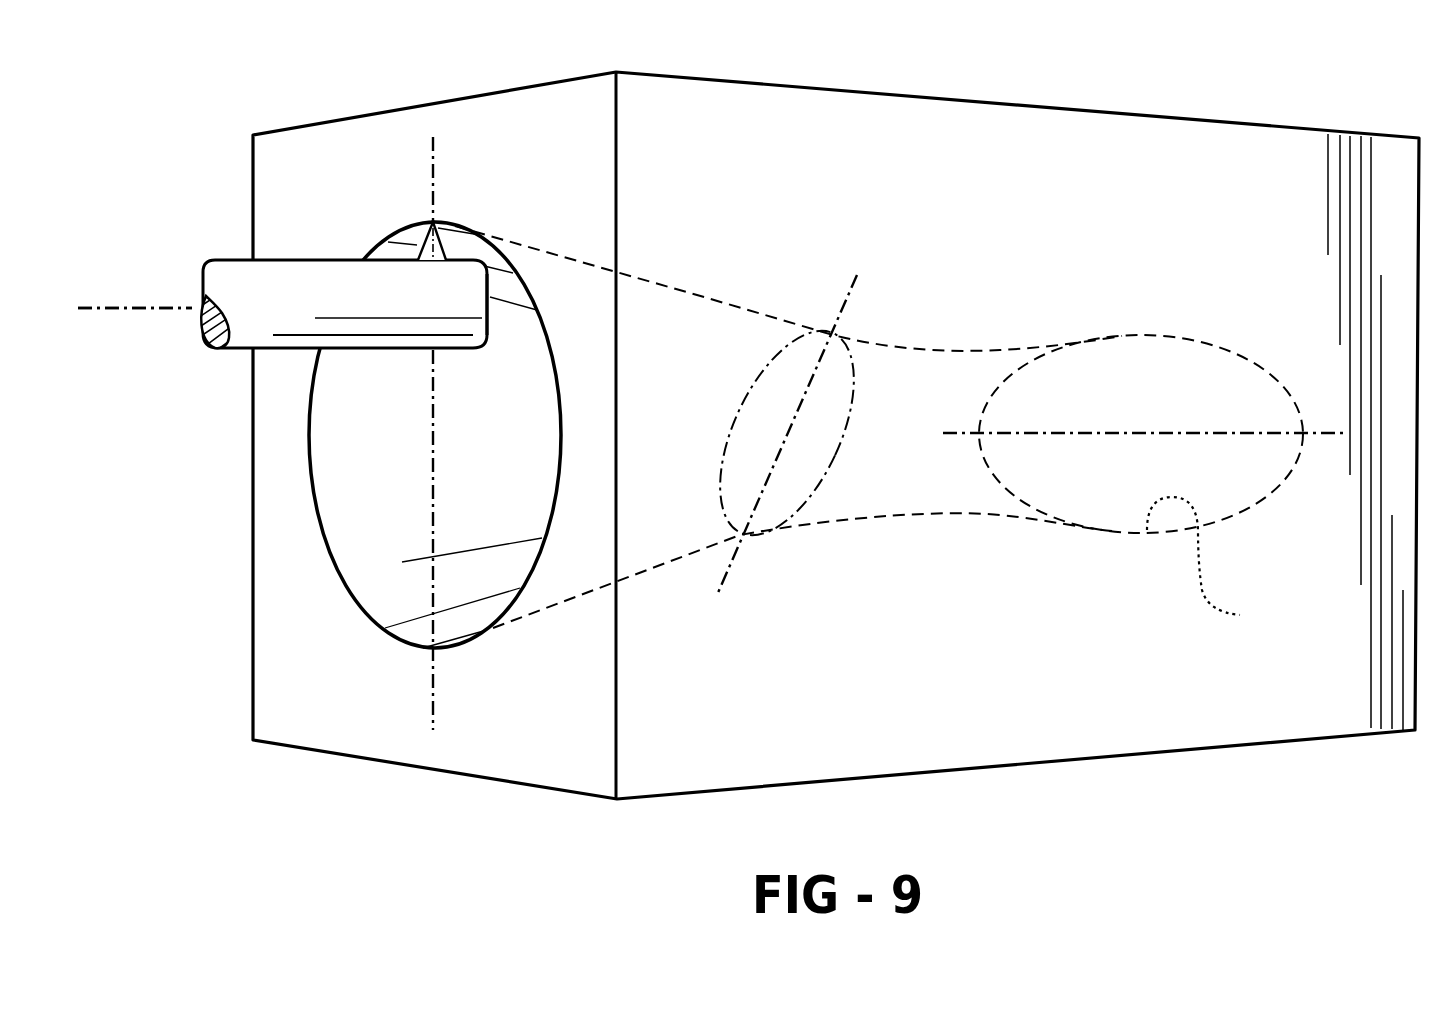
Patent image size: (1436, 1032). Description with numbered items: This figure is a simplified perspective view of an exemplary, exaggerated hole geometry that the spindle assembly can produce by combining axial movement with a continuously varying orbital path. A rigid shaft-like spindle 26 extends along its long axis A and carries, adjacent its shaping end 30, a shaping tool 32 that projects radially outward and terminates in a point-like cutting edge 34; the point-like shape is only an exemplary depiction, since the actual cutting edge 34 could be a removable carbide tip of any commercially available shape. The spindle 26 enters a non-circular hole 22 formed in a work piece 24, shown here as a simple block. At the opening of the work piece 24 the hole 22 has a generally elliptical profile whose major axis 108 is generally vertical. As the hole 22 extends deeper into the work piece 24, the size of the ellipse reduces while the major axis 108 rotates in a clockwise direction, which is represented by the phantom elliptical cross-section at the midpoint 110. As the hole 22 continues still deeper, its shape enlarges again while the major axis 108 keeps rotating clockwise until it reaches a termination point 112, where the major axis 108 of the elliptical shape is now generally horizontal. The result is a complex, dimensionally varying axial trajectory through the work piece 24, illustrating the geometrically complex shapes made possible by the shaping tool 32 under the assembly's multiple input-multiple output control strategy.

The non-circular hole 22 is at (356, 550).
The work piece 24 is at (797, 88).
The spindle 26 is at (372, 298).
The shaping end 30 is at (486, 325).
The shaping tool 32 is at (452, 242).
The cutting edge 34 is at (432, 221).
The major axis 108 is at (433, 182).
The midpoint 110 is at (812, 493).
The termination point 112 is at (1141, 483).
The long axis A is at (128, 307).